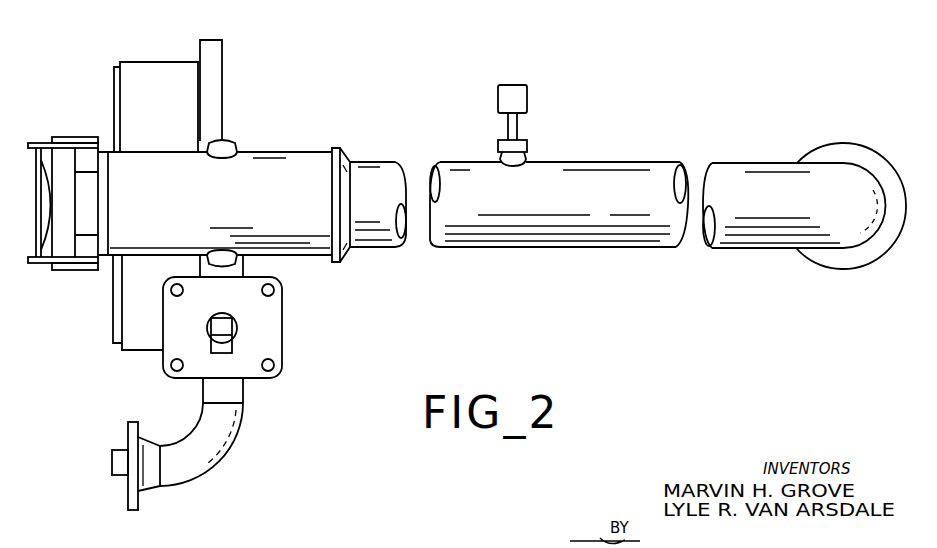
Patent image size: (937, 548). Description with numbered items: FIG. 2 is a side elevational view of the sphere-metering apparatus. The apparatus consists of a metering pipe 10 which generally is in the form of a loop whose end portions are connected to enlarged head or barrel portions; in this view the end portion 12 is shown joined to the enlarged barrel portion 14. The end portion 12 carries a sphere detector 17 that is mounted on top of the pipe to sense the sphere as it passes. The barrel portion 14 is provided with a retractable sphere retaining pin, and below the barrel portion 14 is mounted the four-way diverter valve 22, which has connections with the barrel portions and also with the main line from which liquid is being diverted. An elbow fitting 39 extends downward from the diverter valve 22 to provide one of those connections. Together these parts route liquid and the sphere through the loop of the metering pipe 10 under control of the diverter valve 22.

The metering pipe 10 is at (651, 250).
The end portion 12 is at (636, 163).
The barrel portion 14 is at (266, 203).
The sphere detector 17 is at (520, 123).
The four-way diverter valve 22 is at (283, 340).
The elbow fitting 39 is at (130, 503).